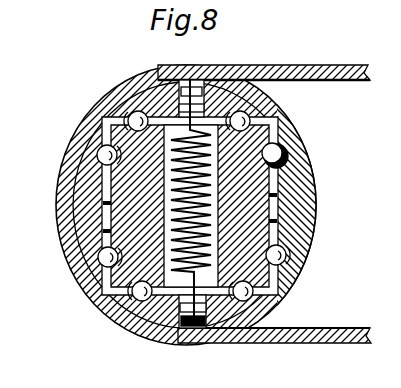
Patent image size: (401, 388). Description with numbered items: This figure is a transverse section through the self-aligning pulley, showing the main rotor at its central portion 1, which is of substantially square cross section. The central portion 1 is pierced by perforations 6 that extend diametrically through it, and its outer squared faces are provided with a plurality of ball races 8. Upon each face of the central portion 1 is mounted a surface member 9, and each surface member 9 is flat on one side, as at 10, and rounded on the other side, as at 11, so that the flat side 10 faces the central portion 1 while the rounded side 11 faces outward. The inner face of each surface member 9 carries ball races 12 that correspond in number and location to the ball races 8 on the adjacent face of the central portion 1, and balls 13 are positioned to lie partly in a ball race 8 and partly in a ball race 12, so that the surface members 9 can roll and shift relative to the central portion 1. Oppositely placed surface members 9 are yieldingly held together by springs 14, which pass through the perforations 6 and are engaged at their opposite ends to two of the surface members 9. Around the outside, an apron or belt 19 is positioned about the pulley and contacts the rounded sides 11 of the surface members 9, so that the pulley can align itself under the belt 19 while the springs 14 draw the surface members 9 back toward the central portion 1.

The central portion 1 is at (292, 182).
The perforations 6 is at (219, 200).
The ball races 8 is at (116, 153).
The surface member 9 is at (140, 98).
The flat side 10 is at (102, 231).
The rounded side 11 is at (72, 262).
The ball races 12 is at (118, 84).
The balls 13 is at (98, 148).
The springs 14 is at (104, 203).
The apron or belt 19 is at (338, 64).